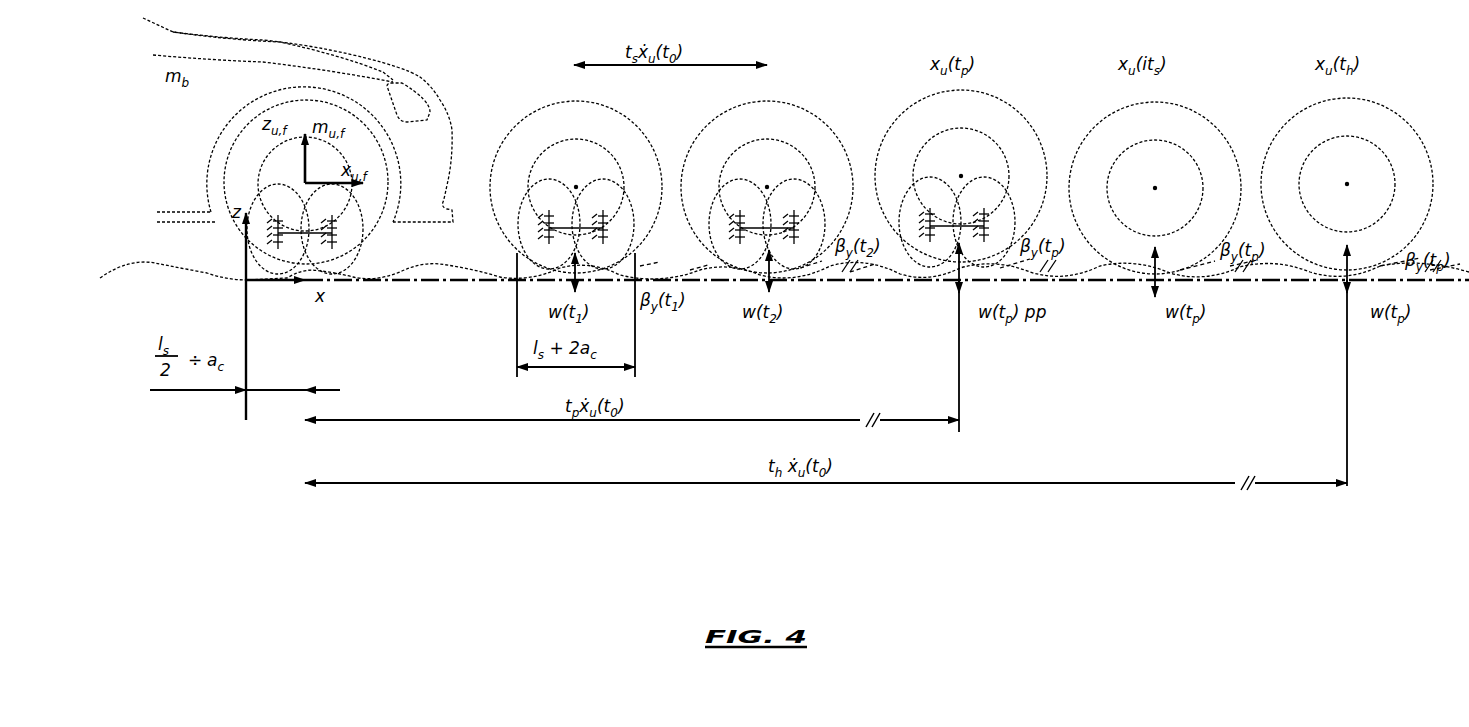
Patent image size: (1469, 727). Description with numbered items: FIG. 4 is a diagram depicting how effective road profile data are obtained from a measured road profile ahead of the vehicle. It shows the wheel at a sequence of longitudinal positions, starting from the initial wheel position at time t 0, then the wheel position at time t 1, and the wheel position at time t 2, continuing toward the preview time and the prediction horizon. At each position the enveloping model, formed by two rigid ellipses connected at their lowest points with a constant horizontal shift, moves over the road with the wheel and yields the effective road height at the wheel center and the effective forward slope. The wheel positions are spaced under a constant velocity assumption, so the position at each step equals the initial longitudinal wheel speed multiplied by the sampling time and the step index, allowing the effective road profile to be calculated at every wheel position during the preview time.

The wheel position at time t0 0 is at (305, 498).
The wheel position at time t1 1 is at (574, 185).
The wheel position at time t2 2 is at (767, 187).